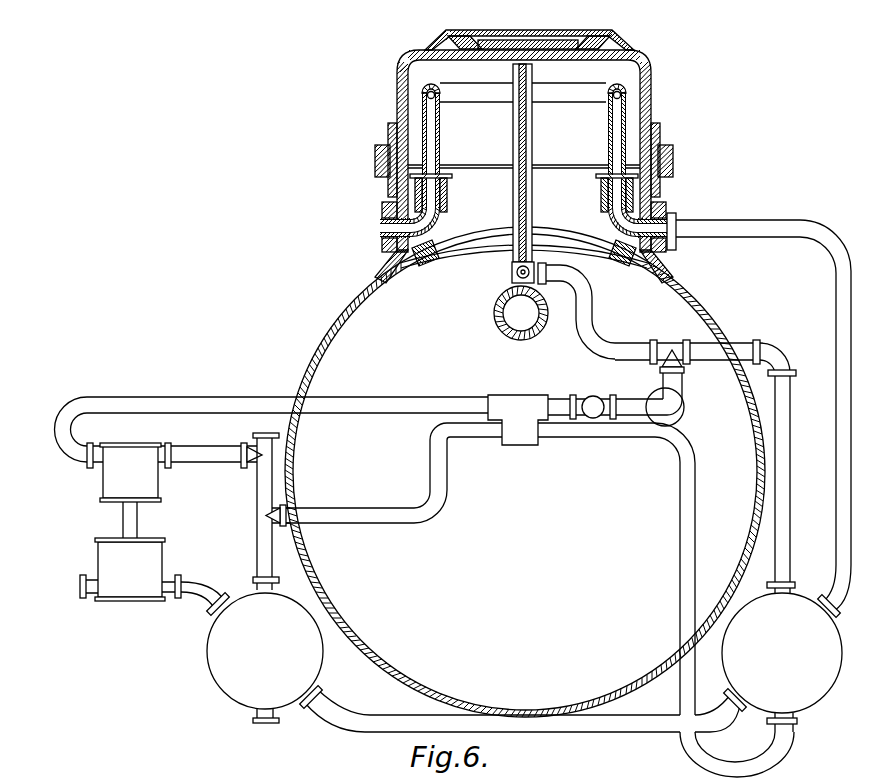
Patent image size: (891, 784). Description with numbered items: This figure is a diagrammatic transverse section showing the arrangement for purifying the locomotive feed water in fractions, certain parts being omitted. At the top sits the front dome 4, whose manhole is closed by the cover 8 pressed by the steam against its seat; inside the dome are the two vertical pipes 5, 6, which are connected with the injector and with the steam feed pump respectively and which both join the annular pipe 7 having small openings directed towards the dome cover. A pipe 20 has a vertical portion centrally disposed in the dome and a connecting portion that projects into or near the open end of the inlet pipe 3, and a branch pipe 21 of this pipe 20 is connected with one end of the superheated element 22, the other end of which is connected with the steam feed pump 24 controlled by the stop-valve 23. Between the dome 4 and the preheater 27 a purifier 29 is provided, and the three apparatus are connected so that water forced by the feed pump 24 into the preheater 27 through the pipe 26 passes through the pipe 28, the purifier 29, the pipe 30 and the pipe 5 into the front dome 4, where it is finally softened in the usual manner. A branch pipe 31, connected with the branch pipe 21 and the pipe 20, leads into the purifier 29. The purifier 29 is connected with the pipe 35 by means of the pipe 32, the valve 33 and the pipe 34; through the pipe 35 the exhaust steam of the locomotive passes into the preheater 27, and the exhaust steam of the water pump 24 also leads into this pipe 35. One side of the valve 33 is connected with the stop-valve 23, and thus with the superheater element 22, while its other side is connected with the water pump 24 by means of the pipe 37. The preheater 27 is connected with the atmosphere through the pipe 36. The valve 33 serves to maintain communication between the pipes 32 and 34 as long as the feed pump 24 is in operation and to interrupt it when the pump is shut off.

The inlet pipe 3 is at (517, 300).
The front dome 4 is at (374, 169).
The vertical pipe 5 is at (612, 207).
The vertical pipe 6 is at (432, 205).
The annular pipe 7 is at (455, 90).
The cover 8 is at (603, 43).
The pipe 20 is at (533, 136).
The branch pipe 21 is at (645, 380).
The superheated element 22 is at (683, 407).
The stop-valve 23 is at (593, 398).
The steam feed pump 24 is at (108, 545).
The pipe 26 is at (206, 597).
The preheater 27 is at (230, 675).
The pipe 28 is at (562, 722).
The purifier 29 is at (810, 685).
The pipe 30 is at (840, 317).
The branch-pipe 31 is at (780, 435).
The pipe 32 is at (689, 514).
The valve 33 is at (523, 403).
The pipe 34 is at (430, 500).
The pipe 35 is at (266, 493).
The pipe 36 is at (262, 722).
The pipe 37 is at (348, 403).